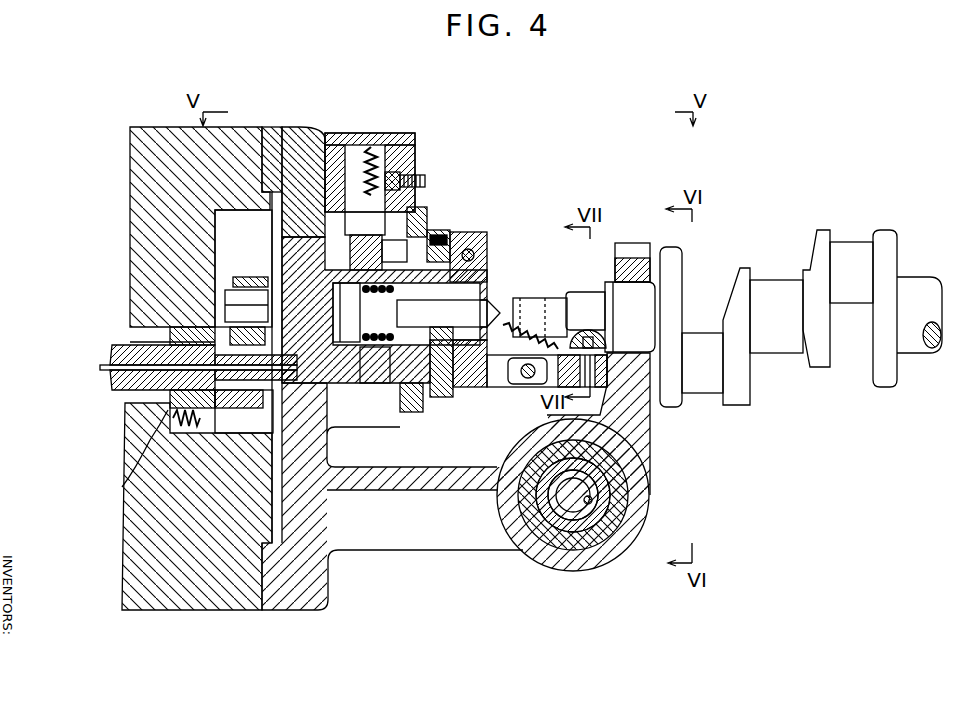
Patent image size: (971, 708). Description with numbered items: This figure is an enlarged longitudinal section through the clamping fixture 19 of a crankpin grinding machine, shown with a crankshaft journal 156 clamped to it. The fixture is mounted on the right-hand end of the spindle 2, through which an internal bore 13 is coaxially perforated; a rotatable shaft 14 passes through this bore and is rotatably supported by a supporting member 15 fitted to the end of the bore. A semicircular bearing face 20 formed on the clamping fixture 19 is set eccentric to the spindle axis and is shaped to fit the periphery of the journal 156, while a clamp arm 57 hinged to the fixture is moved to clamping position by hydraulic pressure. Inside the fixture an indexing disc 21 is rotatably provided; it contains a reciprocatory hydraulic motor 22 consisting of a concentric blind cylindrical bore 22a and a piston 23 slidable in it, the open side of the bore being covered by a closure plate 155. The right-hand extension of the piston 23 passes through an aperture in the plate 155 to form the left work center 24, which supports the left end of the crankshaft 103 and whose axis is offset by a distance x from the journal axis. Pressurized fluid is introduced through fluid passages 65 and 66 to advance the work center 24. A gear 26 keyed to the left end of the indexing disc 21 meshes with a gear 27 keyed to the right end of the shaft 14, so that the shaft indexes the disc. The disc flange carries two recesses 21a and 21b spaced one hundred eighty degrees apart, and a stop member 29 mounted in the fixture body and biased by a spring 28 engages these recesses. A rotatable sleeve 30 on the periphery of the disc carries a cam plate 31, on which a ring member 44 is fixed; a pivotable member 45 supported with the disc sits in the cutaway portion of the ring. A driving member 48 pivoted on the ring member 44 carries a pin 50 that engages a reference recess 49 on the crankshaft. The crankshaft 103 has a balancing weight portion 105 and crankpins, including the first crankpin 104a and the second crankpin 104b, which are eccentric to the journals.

The spindle 2 is at (178, 165).
The internal bore 13 is at (122, 403).
The rotatable shaft 14 is at (118, 343).
The supporting member 15 is at (122, 487).
The clamping fixture 19 is at (358, 610).
The semicircular bearing face 20 is at (653, 393).
The indexing disc 21 is at (363, 365).
The recess 21a is at (418, 210).
The recess 21b is at (373, 385).
The reciprocatory hydraulic motor 22 is at (455, 300).
The blind cylindrical bore 22a is at (440, 397).
The piston 23 is at (300, 240).
The left work center 24 is at (518, 297).
The gear 26 is at (243, 280).
The gear 27 is at (245, 395).
The spring 28 is at (376, 147).
The stop member 29 is at (343, 153).
The rotatable sleeve 30 is at (400, 393).
The cam plate 31 is at (433, 225).
The ring member 44 is at (463, 382).
The pivotable member 45 is at (487, 238).
The driving member 48 is at (545, 387).
The reference recess 49 is at (589, 330).
The pin 50 is at (650, 457).
The clamp arm 57 is at (637, 265).
The fluid passage 65 is at (113, 368).
The fluid passage 66 is at (305, 280).
The crankshaft 103 is at (812, 257).
The first crankpin 104a is at (705, 380).
The second crankpin 104b is at (858, 252).
The balancing weight portion 105 is at (678, 258).
The closure plate 155 is at (450, 260).
The crankshaft journal 156 is at (622, 255).